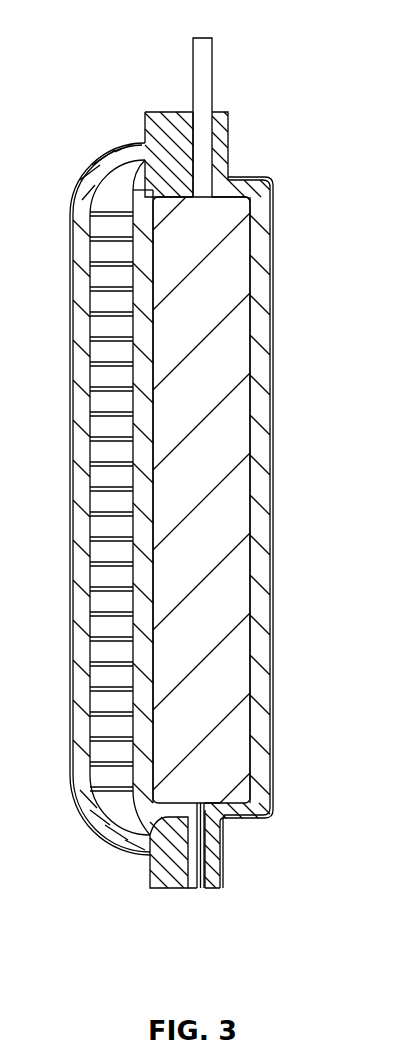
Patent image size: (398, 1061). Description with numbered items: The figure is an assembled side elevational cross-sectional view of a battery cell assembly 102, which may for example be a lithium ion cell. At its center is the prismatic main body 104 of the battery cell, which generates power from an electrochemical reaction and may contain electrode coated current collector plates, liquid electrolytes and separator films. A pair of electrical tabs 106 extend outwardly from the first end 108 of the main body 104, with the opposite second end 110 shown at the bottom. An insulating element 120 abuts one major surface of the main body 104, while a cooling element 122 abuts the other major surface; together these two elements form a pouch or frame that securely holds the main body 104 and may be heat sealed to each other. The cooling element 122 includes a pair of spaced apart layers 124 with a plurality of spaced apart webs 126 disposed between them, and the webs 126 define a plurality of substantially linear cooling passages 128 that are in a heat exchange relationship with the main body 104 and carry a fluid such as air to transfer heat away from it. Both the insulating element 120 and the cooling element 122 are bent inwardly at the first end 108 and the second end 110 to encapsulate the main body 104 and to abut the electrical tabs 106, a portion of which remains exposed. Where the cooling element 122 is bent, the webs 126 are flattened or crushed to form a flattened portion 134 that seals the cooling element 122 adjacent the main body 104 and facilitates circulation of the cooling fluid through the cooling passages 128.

The battery cell assembly 102 is at (280, 40).
The main body 104 is at (219, 358).
The electrical tabs 106 is at (213, 53).
The first end 108 is at (230, 100).
The second end 110 is at (203, 893).
The insulating element 120 is at (275, 223).
The cooling element 122 is at (68, 635).
The spaced apart layers 124 is at (143, 742).
The webs 126 is at (110, 664).
The cooling passages 128 is at (104, 552).
The flattened portion 134 is at (170, 111).